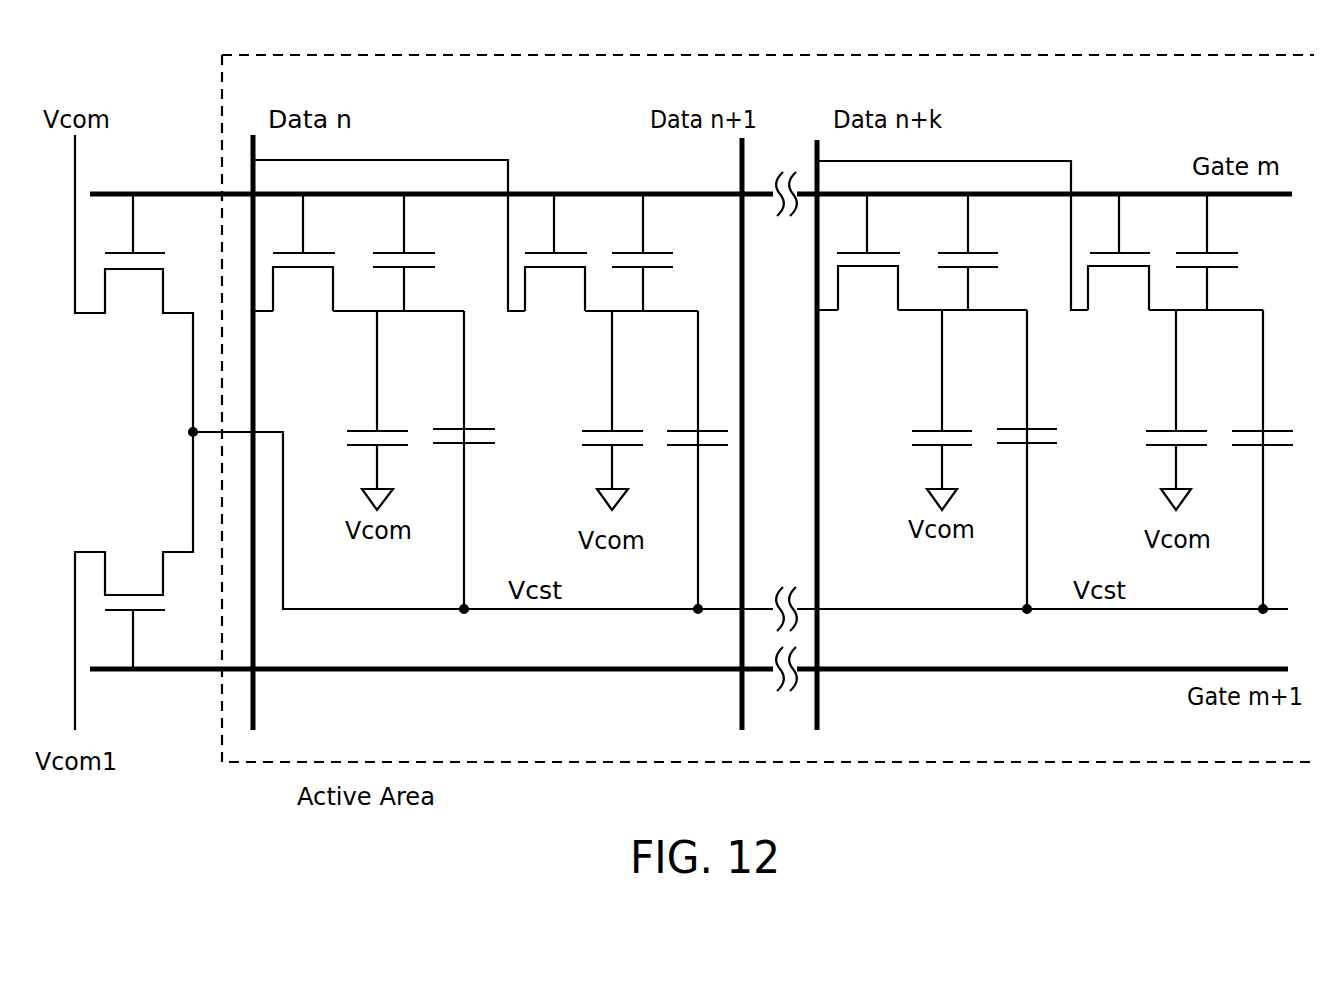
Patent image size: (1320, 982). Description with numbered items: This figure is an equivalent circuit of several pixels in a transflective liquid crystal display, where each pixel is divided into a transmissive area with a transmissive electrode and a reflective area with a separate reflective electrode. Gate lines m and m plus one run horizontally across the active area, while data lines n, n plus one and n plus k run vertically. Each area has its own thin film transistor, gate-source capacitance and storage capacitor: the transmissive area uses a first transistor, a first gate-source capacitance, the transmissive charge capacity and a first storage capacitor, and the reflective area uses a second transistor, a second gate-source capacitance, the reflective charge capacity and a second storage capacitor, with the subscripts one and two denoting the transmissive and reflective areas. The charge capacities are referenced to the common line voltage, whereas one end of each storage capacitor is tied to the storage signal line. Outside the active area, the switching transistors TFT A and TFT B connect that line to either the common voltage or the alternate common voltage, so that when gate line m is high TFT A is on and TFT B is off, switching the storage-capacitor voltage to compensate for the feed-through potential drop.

The switching TFT A is at (133, 277).
The switching TFT B is at (133, 588).